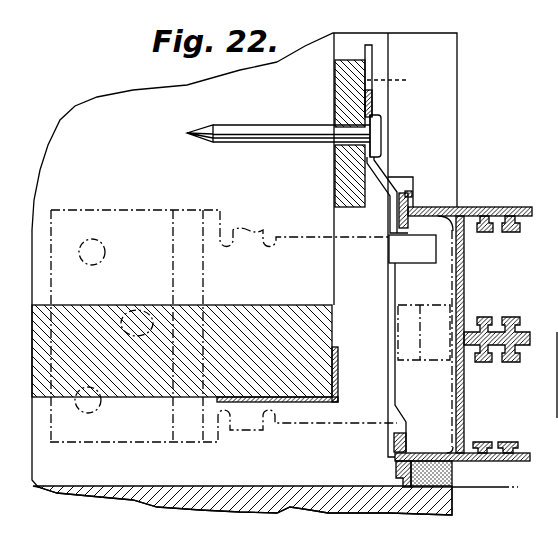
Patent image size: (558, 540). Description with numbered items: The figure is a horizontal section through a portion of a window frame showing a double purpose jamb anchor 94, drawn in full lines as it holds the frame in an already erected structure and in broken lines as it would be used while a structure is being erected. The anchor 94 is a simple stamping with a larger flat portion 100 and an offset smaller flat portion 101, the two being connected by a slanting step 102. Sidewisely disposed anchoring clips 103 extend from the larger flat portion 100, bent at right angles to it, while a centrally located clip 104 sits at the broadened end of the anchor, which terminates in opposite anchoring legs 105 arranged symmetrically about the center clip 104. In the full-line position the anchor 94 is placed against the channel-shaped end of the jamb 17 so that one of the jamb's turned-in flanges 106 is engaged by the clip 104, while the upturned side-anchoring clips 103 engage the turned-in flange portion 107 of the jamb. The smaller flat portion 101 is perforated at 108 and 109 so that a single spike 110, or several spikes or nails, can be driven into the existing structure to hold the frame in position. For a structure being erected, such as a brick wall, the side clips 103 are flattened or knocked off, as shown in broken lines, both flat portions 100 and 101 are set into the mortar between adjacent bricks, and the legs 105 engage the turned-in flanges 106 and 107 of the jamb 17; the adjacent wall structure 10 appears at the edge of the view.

The base structure 10 is at (530, 497).
The jamb 17 is at (478, 463).
The double purpose jamb anchor 94 is at (375, 62).
The larger flat portion 100 is at (394, 283).
The offset smaller flat portion 101 is at (372, 50).
The slanting step 102 is at (388, 177).
The anchoring clips 103 is at (428, 250).
The centrally located clip 104 is at (447, 337).
The anchoring legs 105 is at (459, 203).
The turned-in flange 106 is at (394, 443).
The turned-in flange portion 107 is at (397, 223).
The perforation 108 is at (365, 110).
The perforation 109 is at (404, 80).
The spike 110 is at (273, 125).